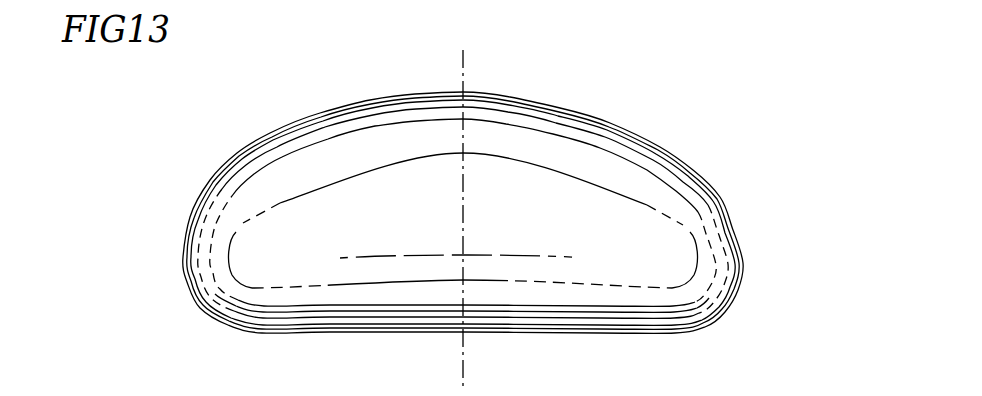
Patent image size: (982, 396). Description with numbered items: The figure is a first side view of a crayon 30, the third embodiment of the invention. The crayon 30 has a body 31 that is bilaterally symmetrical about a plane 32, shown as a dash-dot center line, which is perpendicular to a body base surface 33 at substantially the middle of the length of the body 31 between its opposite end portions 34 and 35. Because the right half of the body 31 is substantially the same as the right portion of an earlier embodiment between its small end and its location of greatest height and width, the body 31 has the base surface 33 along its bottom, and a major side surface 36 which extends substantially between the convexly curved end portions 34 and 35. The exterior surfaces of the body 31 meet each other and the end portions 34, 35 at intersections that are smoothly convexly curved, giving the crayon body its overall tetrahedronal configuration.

The crayon 30 is at (700, 120).
The body 31 is at (641, 177).
The plane 32 is at (466, 68).
The body base surface 33 is at (437, 332).
The end portion 34 is at (182, 260).
The end portion 35 is at (743, 263).
The major side surface 36 is at (526, 211).